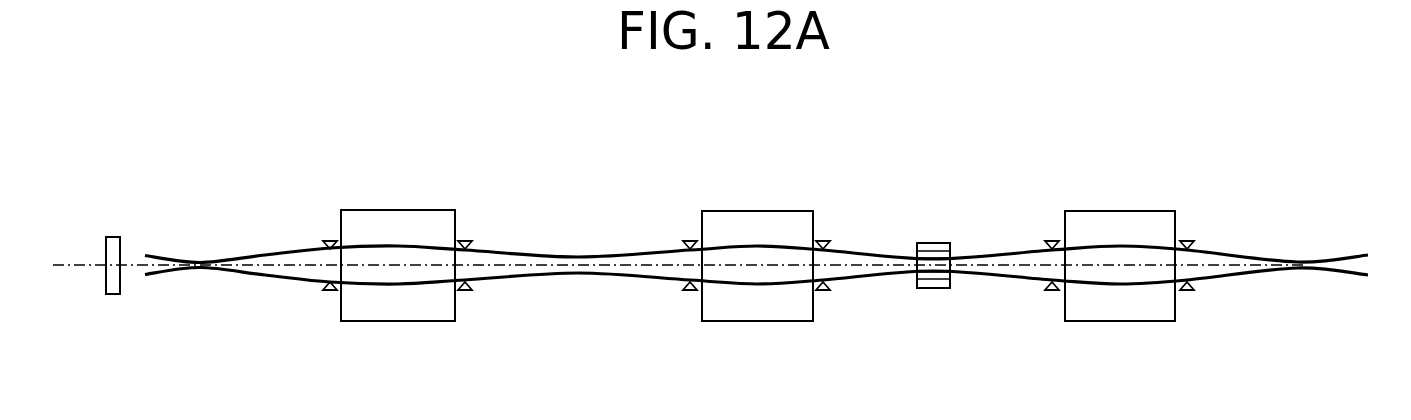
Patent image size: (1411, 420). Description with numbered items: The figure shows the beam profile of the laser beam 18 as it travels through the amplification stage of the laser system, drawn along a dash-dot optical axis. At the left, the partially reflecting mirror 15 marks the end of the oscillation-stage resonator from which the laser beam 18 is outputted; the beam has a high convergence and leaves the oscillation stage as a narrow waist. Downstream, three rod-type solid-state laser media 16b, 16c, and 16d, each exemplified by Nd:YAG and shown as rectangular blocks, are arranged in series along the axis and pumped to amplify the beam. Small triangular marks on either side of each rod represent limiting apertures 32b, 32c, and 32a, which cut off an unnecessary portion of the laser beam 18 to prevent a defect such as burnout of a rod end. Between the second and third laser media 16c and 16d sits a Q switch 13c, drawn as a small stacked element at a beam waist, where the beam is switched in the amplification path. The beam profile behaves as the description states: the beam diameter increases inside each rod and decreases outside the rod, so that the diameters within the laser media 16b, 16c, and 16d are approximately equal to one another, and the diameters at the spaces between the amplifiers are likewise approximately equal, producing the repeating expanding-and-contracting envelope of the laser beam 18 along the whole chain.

The partially reflecting mirror 15 is at (110, 230).
The laser beam 18 is at (260, 256).
The rod-type solid-state laser medium 16b is at (393, 209).
The rod-type solid-state laser medium 16c is at (752, 210).
The rod-type solid-state laser medium 16d is at (1115, 210).
The limiting aperture 32b is at (466, 240).
The limiting aperture 32c is at (689, 240).
The limiting aperture 32a is at (1053, 240).
The Q switch 13c is at (929, 290).